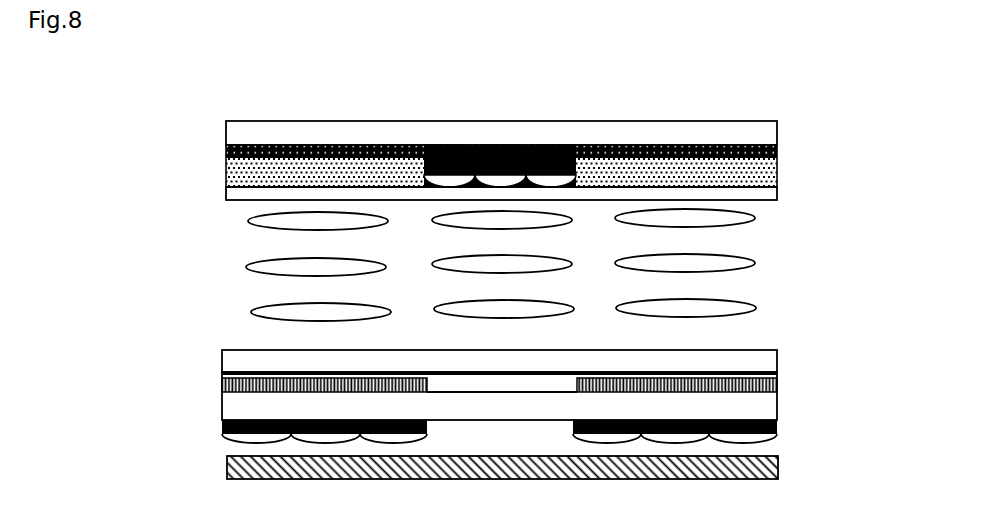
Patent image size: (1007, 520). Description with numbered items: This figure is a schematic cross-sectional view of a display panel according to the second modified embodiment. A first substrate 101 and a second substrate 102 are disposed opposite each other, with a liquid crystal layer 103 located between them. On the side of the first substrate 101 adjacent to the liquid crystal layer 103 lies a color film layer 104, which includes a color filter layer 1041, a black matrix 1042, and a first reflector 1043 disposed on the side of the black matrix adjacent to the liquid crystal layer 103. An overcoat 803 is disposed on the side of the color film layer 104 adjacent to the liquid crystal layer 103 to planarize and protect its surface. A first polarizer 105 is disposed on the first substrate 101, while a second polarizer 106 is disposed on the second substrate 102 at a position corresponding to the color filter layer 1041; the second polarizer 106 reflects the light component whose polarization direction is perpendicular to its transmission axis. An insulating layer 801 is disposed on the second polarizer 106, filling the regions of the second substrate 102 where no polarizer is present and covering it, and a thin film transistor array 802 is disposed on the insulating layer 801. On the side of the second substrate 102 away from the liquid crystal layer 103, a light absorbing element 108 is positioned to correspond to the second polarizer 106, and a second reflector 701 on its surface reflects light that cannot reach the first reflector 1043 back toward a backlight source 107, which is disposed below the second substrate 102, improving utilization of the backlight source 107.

The first substrate 101 is at (768, 129).
The first polarizer 105 is at (777, 149).
The color filter layer 1041 is at (770, 174).
The black matrix 1042 is at (503, 147).
The first reflector 1043 is at (560, 147).
The color film layer 104 is at (777, 187).
The overcoat 803 is at (240, 194).
The liquid crystal layer 103 is at (770, 257).
The thin film transistor array 802 is at (222, 356).
The insulating layer 801 is at (225, 374).
The second polarizer 106 is at (777, 383).
The second substrate 102 is at (770, 406).
The light absorbing element 108 is at (777, 430).
The second reflector 701 is at (765, 440).
The backlight source 107 is at (777, 474).